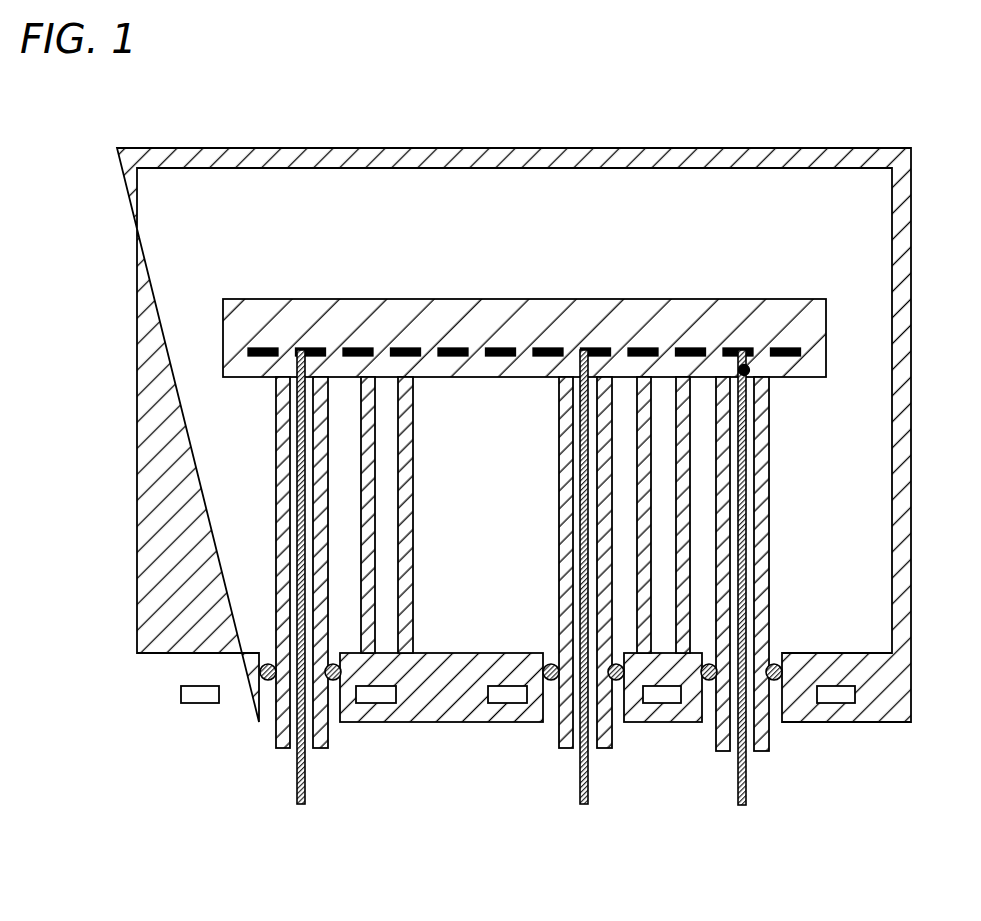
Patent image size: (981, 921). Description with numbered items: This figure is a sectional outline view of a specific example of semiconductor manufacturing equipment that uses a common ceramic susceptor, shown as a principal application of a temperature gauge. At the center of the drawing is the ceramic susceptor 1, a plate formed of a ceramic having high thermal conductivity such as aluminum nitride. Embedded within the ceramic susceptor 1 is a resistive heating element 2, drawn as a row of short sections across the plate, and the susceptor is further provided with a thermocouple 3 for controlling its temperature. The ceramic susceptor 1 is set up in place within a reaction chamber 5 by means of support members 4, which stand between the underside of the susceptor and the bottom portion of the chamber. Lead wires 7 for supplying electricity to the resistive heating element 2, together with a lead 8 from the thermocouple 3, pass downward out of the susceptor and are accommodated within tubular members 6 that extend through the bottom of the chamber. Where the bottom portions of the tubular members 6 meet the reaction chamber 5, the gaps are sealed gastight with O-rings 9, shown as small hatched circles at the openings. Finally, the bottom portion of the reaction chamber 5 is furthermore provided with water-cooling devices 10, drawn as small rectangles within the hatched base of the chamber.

The ceramic susceptor 1 is at (745, 287).
The resistive heating element 2 is at (453, 349).
The thermocouple 3 is at (749, 372).
The support members 4 is at (413, 490).
The reaction chamber 5 is at (845, 148).
The tubular members 6 is at (276, 524).
The lead wires 7 is at (306, 783).
The lead 8 is at (747, 780).
The O-rings 9 is at (266, 661).
The water-cooling devices 10 is at (208, 697).